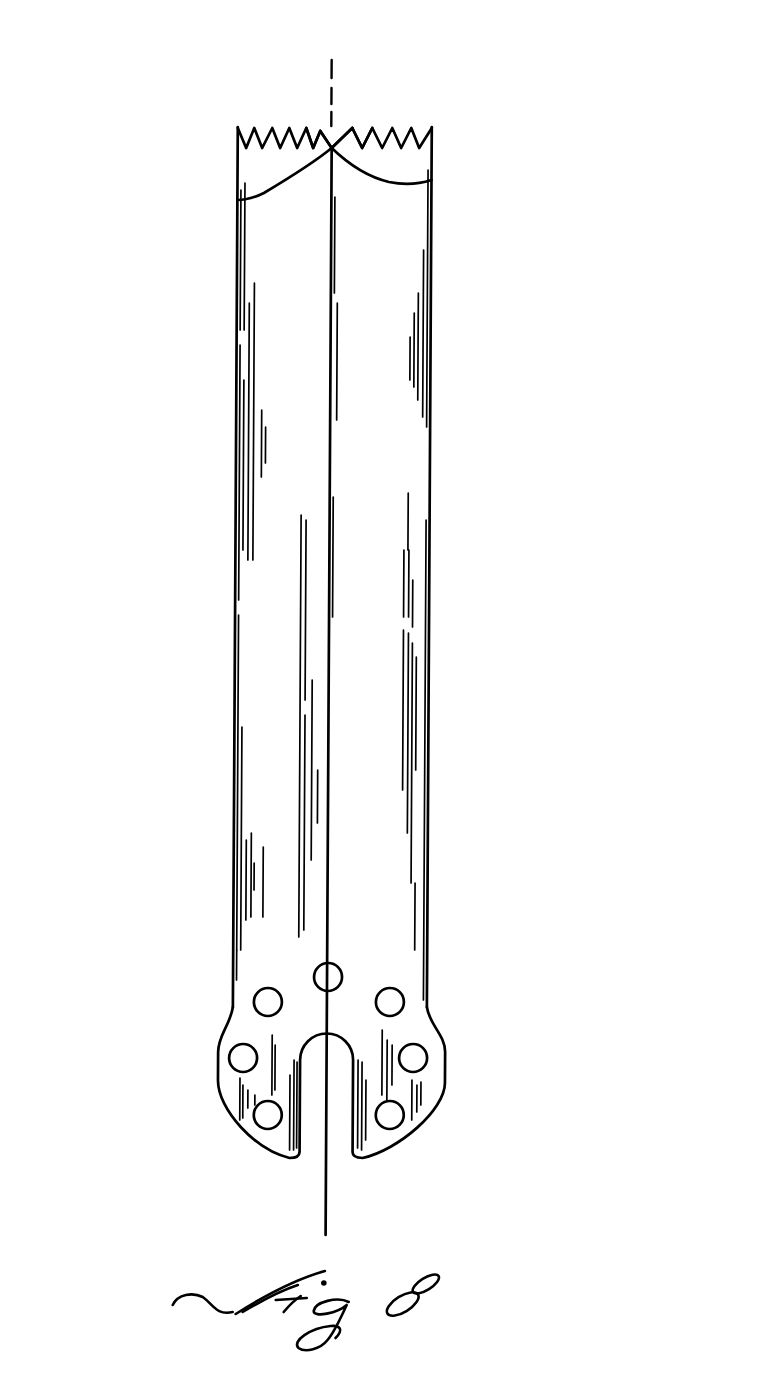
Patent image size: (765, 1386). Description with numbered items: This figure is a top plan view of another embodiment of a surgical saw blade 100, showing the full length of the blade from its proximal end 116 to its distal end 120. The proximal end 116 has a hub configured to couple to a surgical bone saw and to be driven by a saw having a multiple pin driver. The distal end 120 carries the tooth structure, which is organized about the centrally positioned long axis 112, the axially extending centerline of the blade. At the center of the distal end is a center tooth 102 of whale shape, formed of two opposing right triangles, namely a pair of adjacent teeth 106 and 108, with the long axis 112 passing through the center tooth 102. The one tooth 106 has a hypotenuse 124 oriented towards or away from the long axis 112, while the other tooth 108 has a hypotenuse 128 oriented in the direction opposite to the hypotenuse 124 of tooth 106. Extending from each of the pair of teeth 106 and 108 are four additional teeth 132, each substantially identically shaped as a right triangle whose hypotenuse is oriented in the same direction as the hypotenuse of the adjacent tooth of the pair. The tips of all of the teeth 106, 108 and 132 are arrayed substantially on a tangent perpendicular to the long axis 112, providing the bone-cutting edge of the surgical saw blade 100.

The surgical saw blade 100 is at (473, 348).
The center tooth 102 is at (342, 130).
The tooth 106 is at (344, 143).
The tooth 108 is at (332, 148).
The centrally positioned long axis 112 is at (332, 925).
The proximal end 116 is at (451, 1040).
The distal end 120 is at (432, 166).
The hypotenuse 124 is at (432, 167).
The hypotenuse 128 is at (238, 200).
The additional tooth 132 is at (314, 146).